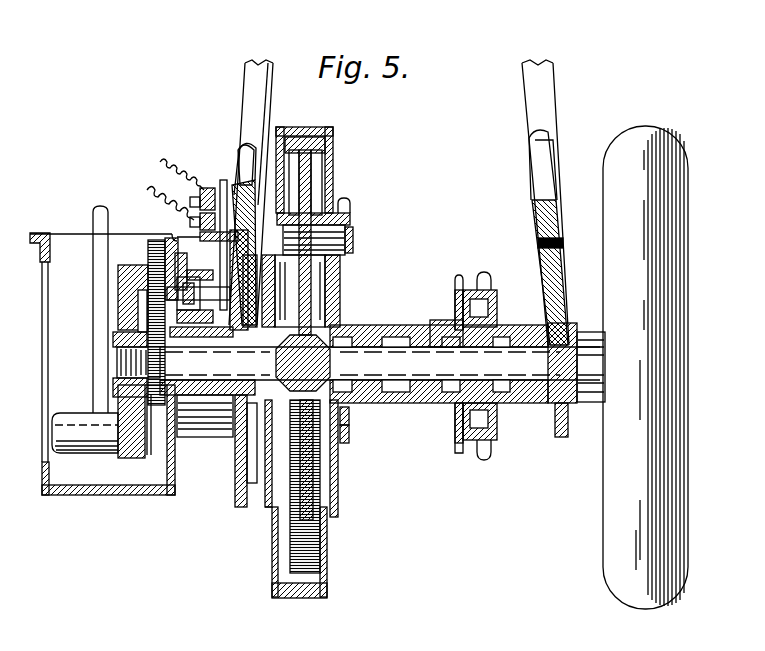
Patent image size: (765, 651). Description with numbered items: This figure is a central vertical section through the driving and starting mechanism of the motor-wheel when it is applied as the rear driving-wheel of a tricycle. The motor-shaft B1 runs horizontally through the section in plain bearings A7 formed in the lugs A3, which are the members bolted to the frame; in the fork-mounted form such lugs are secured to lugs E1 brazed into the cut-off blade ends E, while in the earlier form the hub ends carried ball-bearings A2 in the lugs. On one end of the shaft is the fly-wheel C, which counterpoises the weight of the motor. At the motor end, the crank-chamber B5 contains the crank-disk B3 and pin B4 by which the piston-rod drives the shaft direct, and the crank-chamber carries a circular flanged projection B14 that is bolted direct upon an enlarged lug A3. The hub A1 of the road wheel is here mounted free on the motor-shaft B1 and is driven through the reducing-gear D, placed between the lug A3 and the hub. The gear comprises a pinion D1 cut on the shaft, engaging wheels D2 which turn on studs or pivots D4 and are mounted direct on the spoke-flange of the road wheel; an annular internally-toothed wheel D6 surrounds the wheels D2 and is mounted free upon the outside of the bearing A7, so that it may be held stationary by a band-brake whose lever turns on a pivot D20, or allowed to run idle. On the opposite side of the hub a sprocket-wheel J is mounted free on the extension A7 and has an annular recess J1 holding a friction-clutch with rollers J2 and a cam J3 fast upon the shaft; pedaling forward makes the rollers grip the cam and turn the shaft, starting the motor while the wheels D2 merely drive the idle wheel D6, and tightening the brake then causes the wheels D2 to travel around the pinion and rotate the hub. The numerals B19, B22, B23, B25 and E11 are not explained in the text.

The hub A1 is at (380, 363).
The ball-bearings A2 is at (390, 328).
The lugs A3 is at (235, 495).
The plain bearings A7 is at (505, 382).
The motor-shaft B1 is at (439, 377).
The crank-disk B3 is at (133, 460).
The pin B4 is at (63, 422).
The crank-chamber B5 is at (64, 493).
The circular flanged projection B14 is at (195, 430).
The spring B19 is at (200, 230).
The ratchet gear B22 is at (167, 272).
The bearing block B23 is at (153, 345).
The threaded sleeve B25 is at (195, 398).
The fly-wheel C is at (645, 367).
The reducing-gear D is at (304, 159).
The pinion D1 is at (349, 418).
The wheels D2 is at (313, 172).
The stud or pivot D4 is at (346, 237).
The annular internally-toothed wheel D6 is at (272, 557).
The pivot D20 is at (303, 135).
The cut-off ends of the fork blades E is at (235, 183).
The lugs E1 is at (558, 185).
The bracket loop E11 is at (240, 176).
The sprocket-wheel J is at (493, 290).
The annular recess J1 is at (470, 288).
The rollers J2 is at (462, 302).
The cam J3 is at (463, 320).